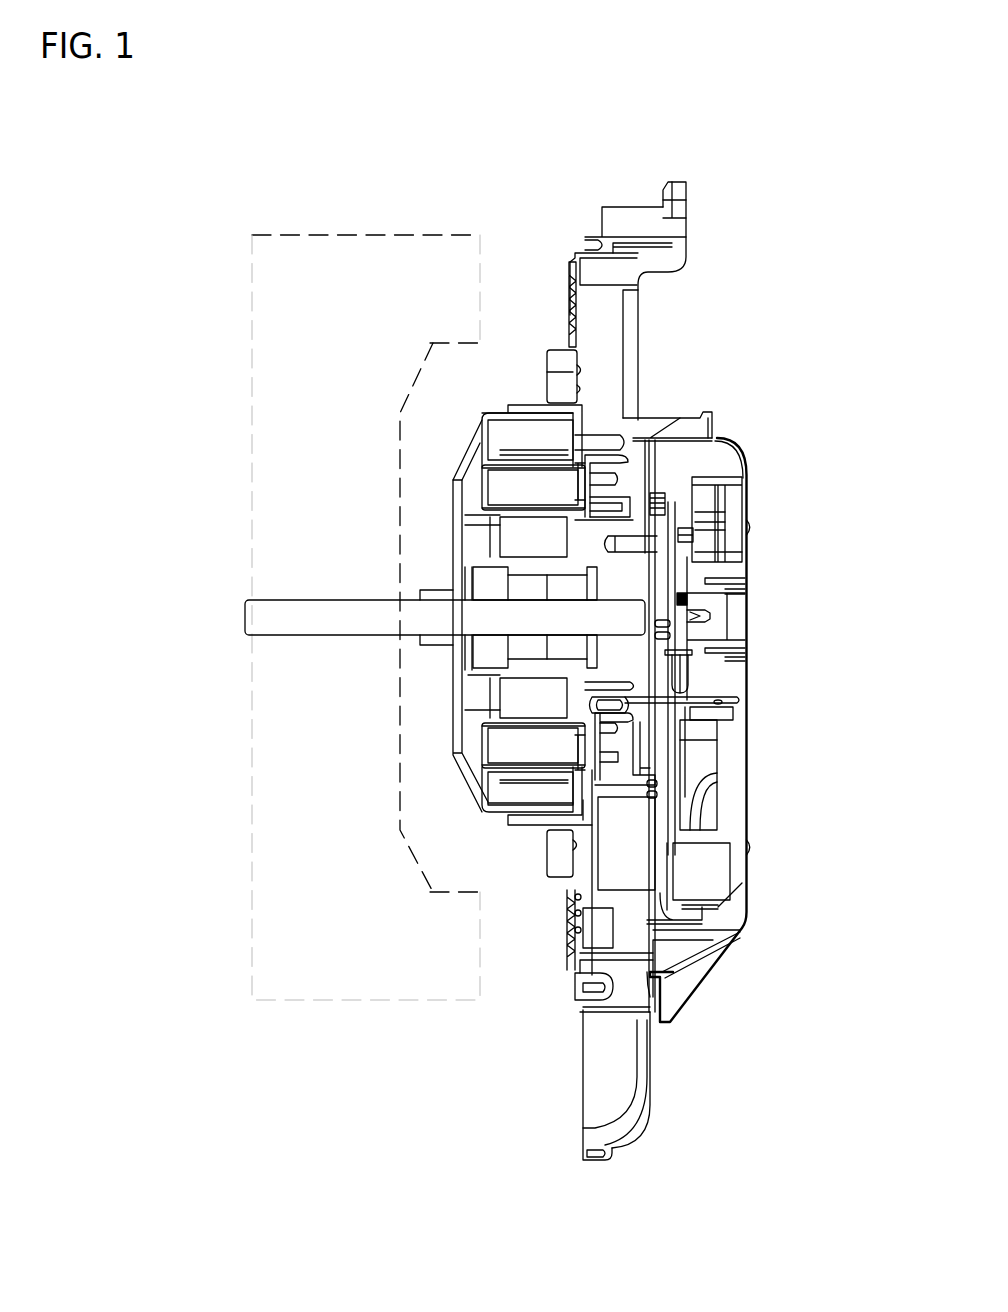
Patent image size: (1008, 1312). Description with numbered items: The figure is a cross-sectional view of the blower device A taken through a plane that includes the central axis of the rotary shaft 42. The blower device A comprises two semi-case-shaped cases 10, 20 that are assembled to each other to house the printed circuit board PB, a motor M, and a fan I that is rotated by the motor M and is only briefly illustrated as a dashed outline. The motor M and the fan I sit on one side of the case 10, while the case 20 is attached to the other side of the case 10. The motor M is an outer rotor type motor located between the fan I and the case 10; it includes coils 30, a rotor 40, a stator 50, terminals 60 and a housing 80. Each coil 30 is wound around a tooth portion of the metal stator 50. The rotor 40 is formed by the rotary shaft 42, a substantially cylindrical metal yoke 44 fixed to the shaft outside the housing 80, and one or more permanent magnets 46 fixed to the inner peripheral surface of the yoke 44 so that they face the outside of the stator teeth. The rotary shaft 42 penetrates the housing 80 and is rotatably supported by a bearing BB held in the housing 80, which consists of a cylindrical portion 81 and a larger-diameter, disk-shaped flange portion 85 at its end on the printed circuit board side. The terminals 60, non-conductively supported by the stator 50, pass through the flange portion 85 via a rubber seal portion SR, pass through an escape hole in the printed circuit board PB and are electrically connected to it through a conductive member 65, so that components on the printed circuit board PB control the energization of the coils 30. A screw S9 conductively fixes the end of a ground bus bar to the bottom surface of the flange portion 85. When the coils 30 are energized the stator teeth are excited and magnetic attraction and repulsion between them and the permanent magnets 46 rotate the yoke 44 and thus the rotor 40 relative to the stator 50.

The case 10 is at (583, 1008).
The case 20 is at (748, 490).
The coil 30 is at (488, 483).
The rotor 40 is at (498, 817).
The rotary shaft 42 is at (245, 622).
The yoke 44 is at (450, 513).
The permanent magnet 46 is at (503, 433).
The stator 50 is at (523, 540).
The terminal 60 is at (705, 693).
The conductive member 65 is at (717, 710).
The housing 80 is at (483, 688).
The cylindrical portion 81 is at (530, 573).
The flange portion 85 is at (633, 507).
The blower device A is at (783, 207).
The bearing BB is at (490, 655).
The fan I is at (252, 958).
The motor M is at (492, 396).
The printed circuit board PB is at (673, 692).
The screw S9 is at (660, 548).
The rubber seal portion SR is at (645, 708).